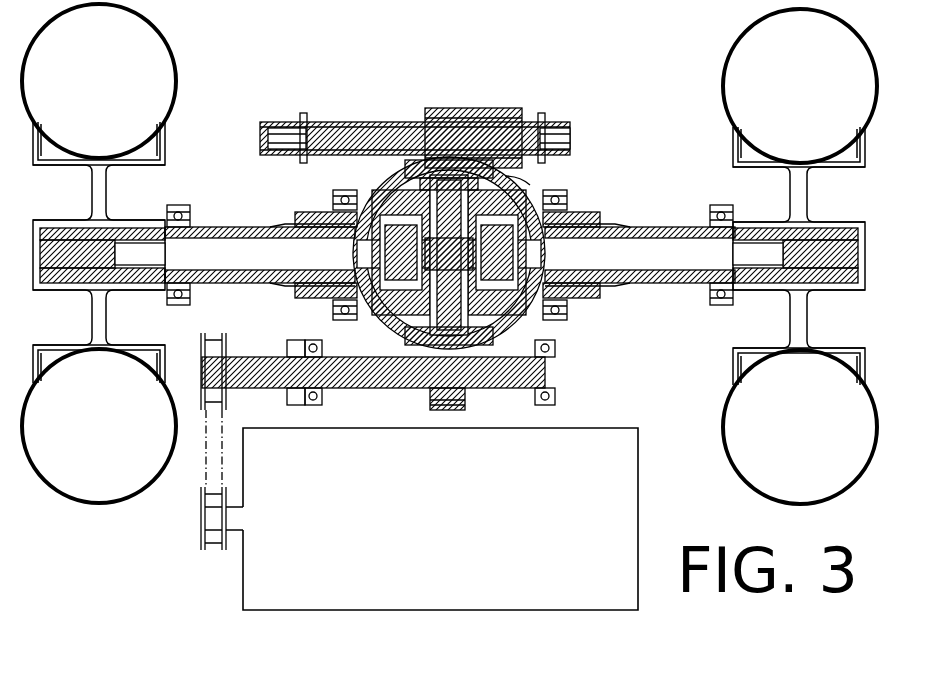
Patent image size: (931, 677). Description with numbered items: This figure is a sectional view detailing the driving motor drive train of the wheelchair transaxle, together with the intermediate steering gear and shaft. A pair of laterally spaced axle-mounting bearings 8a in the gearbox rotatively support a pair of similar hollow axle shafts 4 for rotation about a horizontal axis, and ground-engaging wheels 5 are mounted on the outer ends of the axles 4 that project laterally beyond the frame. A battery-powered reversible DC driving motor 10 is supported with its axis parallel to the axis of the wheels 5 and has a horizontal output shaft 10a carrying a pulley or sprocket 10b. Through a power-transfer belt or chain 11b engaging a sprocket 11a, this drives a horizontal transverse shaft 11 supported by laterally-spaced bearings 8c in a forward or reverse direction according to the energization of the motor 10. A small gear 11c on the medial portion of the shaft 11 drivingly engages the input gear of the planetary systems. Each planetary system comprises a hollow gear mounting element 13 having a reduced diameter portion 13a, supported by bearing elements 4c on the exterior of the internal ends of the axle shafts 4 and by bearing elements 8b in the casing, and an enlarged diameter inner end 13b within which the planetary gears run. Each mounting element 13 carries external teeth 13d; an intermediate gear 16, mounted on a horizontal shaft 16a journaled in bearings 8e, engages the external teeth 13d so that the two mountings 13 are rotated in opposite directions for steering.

The hollow axle shaft 4 is at (236, 278).
The bearing element 4c is at (288, 283).
The ground-engaging wheel 5 is at (449, 254).
The axle-mounting bearing 8a is at (166, 302).
The bearing element 8b is at (331, 201).
The bearing 8c is at (310, 407).
The bearing 8e is at (281, 121).
The driving motor 10 is at (641, 488).
The output shaft 10a is at (235, 532).
The sprocket 10b is at (200, 546).
The horizontal transverse shaft 11 is at (260, 390).
The sprocket 11a is at (203, 388).
The chain 11b is at (203, 455).
The small gear 11c is at (463, 396).
The hollow gear mounting element 13 is at (360, 312).
The reduced diameter portion 13a is at (322, 296).
The enlarged diameter inner end 13b is at (548, 194).
The external teeth 13d is at (420, 164).
The intermediate gear 16 is at (474, 109).
The horizontal shaft 16a is at (363, 120).